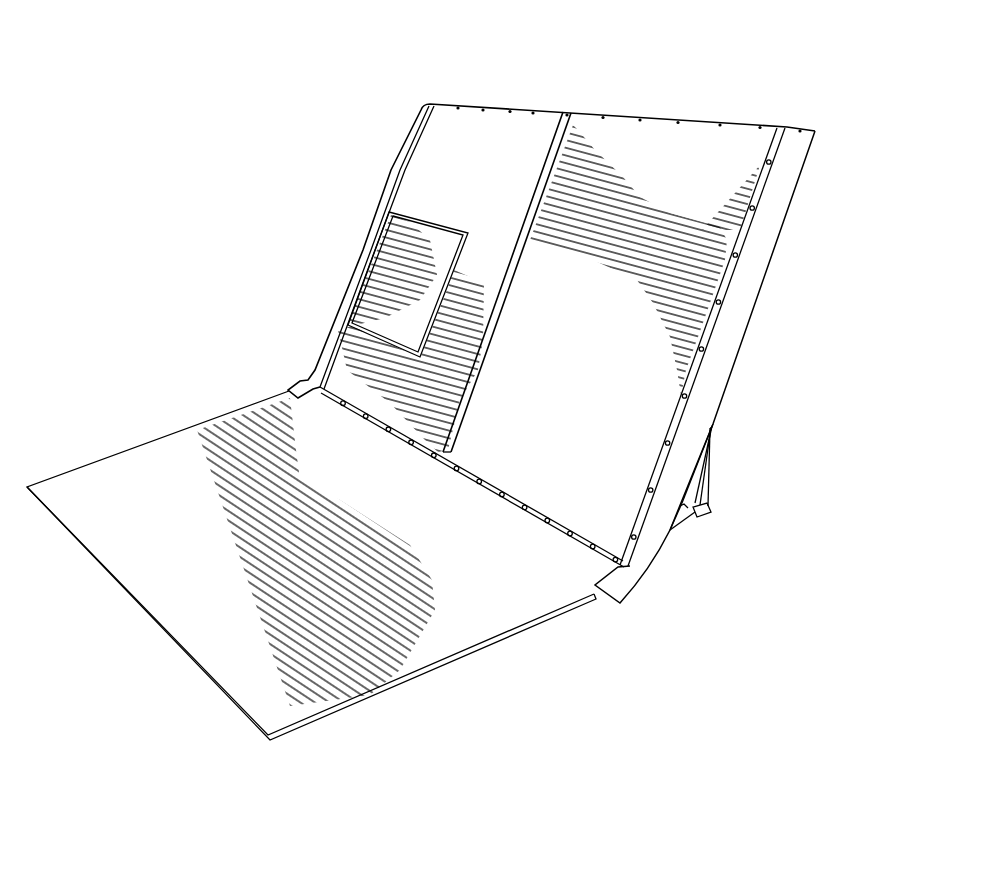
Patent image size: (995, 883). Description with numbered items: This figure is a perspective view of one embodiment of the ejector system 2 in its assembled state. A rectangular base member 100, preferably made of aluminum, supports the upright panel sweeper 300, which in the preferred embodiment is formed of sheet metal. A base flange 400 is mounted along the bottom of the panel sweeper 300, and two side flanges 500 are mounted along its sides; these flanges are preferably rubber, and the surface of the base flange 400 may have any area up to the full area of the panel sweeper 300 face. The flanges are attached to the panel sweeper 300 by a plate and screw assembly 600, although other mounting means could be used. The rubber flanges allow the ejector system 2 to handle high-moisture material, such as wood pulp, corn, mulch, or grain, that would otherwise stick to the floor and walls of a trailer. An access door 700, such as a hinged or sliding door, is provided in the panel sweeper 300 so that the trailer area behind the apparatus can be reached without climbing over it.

The ejector system 2 is at (145, 178).
The rectangular base member 100 is at (711, 509).
The panel sweeper 300 is at (505, 127).
The base flange 400 is at (153, 514).
The side flanges 500 is at (403, 138).
The plate and screw assembly 600 is at (334, 348).
The access door 700 is at (353, 311).